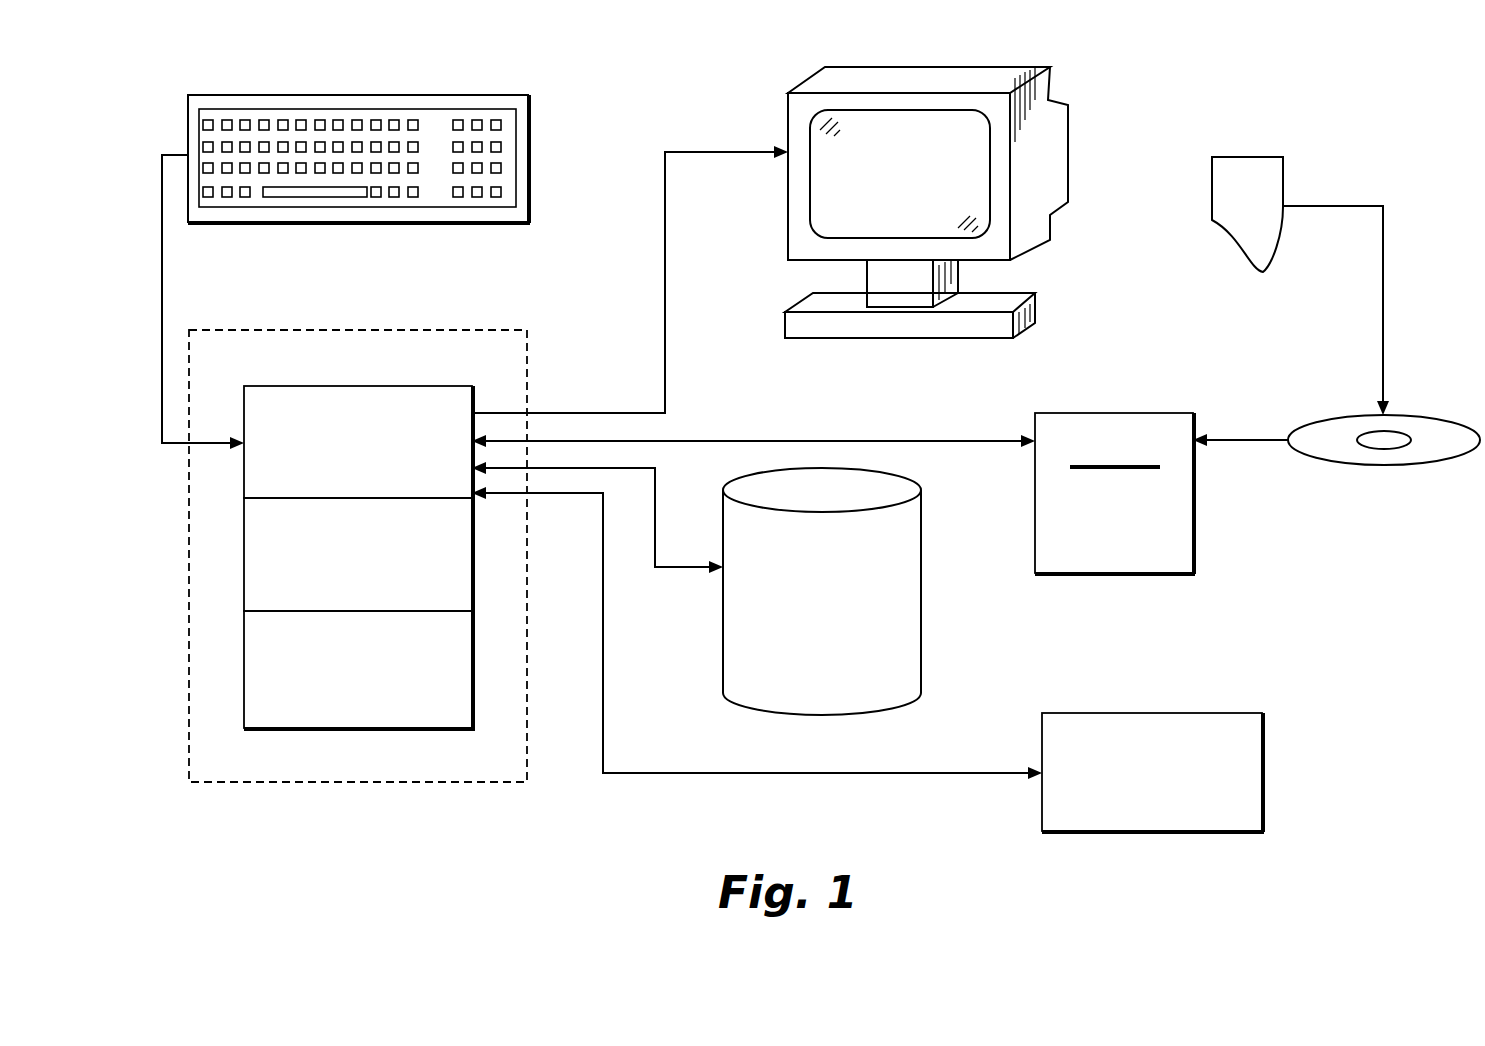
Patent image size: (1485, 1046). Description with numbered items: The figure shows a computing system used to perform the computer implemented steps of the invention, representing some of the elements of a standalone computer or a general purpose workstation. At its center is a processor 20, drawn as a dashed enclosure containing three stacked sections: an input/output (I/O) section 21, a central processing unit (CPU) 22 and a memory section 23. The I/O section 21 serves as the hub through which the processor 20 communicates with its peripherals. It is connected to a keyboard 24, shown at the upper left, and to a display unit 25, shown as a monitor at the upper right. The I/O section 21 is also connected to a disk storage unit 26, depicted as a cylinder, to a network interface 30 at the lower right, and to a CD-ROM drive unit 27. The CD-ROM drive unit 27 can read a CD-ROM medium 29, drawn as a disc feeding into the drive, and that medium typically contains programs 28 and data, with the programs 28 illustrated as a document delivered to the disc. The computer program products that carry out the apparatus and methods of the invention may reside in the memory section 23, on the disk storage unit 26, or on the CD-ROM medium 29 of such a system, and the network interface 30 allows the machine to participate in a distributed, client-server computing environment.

The processor 20 is at (478, 330).
The input/output (I/O) section 21 is at (335, 392).
The central processing unit (CPU) 22 is at (474, 598).
The memory section 23 is at (474, 710).
The keyboard 24 is at (505, 97).
The display unit 25 is at (995, 78).
The disk storage unit 26 is at (917, 565).
The CD-ROM drive unit 27 is at (1065, 413).
The programs 28 is at (1226, 165).
The CD-ROM medium 29 is at (1357, 420).
The network interface 30 is at (1197, 713).